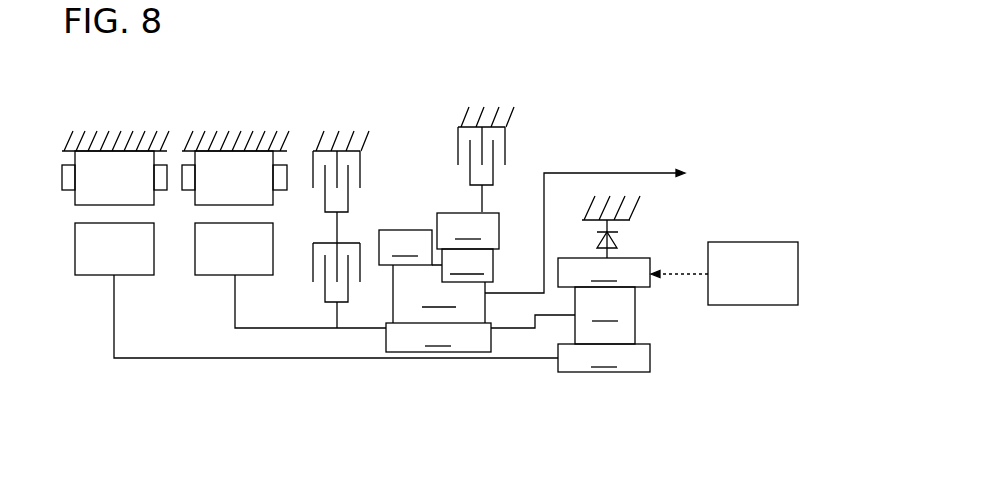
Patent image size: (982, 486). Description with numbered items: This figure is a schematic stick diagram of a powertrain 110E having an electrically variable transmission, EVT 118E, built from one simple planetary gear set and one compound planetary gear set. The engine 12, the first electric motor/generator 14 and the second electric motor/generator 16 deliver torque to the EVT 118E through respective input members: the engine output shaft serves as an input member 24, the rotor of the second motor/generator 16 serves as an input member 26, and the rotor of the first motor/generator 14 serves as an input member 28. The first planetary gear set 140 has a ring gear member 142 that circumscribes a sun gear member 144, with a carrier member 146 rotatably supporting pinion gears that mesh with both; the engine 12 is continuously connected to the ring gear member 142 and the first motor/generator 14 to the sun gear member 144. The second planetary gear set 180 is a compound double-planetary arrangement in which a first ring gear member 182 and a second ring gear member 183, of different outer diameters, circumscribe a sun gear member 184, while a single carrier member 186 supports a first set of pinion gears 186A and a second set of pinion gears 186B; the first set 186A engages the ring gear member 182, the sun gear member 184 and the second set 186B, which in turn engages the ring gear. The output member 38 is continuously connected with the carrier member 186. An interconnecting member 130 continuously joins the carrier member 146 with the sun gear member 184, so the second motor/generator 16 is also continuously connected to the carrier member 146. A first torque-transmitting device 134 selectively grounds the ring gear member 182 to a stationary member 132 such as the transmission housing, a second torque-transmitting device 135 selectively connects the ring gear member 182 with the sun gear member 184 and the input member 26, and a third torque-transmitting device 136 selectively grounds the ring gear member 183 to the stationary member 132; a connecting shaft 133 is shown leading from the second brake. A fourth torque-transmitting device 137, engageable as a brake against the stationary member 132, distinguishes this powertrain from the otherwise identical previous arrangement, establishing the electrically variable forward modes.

The engine 12 is at (753, 242).
The first electric motor/generator 14 is at (78, 216).
The second electric motor/generator 16 is at (276, 210).
The input member 24 is at (677, 270).
The input member 26 is at (235, 297).
The input member 28 is at (113, 315).
The output member 38 is at (652, 173).
The powertrain 110E is at (91, 306).
The EVT 118E is at (649, 136).
The interconnecting member 130 is at (523, 330).
The stationary member 132 is at (337, 134).
The shaft connection from brake to torque path 133 is at (333, 317).
The first torque-transmitting device 134 is at (360, 170).
The second torque-transmitting device 135 is at (349, 243).
The third torque-transmitting device 136 is at (505, 145).
The fourth torque-transmitting device 137 is at (618, 241).
The first planetary gear set 140 is at (653, 322).
The ring gear member 142 is at (604, 272).
The sun gear member 144 is at (604, 358).
The carrier member 146 is at (605, 315).
The second planetary gear set 180 is at (505, 191).
The first ring gear member 182 is at (405, 247).
The second ring gear member 183 is at (468, 231).
The sun gear member 184 is at (438, 337).
The carrier member 186 is at (510, 282).
The first set of pinion gears 186A is at (439, 294).
The second set of pinion gears 186B is at (467, 265).